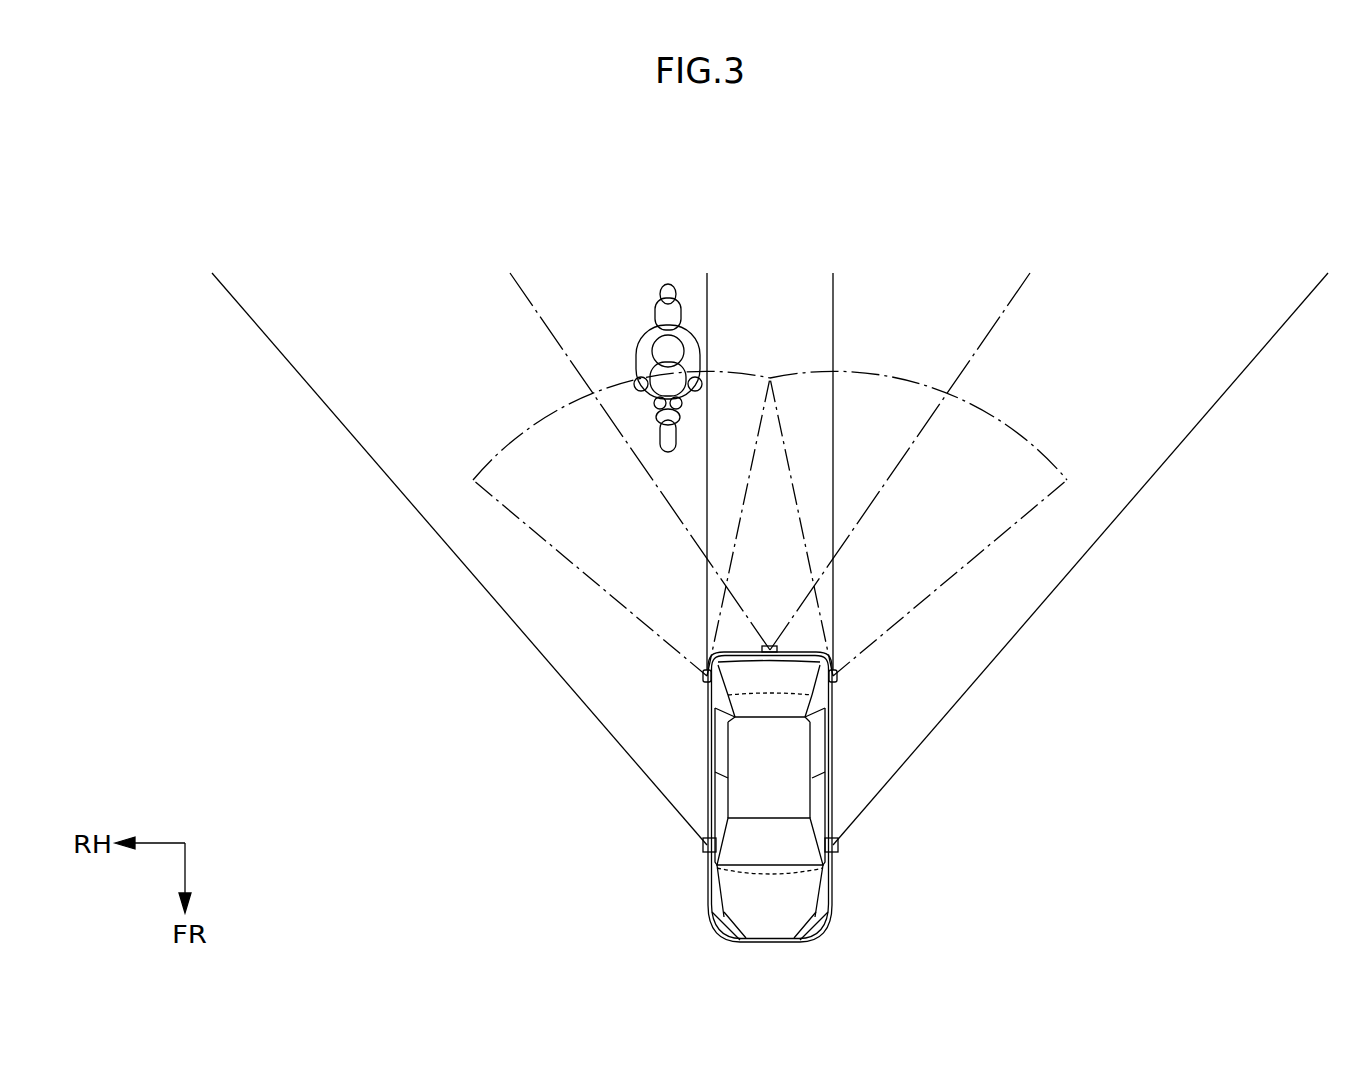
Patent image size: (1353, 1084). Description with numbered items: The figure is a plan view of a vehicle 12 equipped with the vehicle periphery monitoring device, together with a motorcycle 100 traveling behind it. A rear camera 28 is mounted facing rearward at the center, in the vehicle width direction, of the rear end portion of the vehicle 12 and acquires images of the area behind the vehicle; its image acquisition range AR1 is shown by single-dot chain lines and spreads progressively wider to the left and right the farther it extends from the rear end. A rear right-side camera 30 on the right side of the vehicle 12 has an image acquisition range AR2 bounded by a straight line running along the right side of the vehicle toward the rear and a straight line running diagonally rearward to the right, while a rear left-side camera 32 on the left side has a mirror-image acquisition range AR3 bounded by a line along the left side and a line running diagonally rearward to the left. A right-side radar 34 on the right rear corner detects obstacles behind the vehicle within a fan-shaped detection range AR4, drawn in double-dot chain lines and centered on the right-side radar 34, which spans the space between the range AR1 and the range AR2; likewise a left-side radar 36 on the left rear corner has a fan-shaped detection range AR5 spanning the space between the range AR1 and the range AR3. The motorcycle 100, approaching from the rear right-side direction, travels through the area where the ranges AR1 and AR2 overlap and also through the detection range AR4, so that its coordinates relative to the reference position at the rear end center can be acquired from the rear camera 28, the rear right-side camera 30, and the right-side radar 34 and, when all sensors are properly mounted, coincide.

The vehicle 12 is at (834, 879).
The rear camera 28 is at (777, 649).
The rear right-side camera 30 is at (704, 838).
The rear left-side camera 32 is at (836, 838).
The right-side radar 34 is at (702, 680).
The left-side radar 36 is at (838, 680).
The motorcycle 100 is at (683, 308).
The image acquisition range of the rear camera AR1 is at (1018, 294).
The image acquisition range of the rear right-side camera AR2 is at (528, 637).
The image acquisition range of the rear left-side camera AR3 is at (1015, 635).
The detection range of the right-side radar AR4 is at (515, 442).
The detection range of the left-side radar AR5 is at (1032, 437).